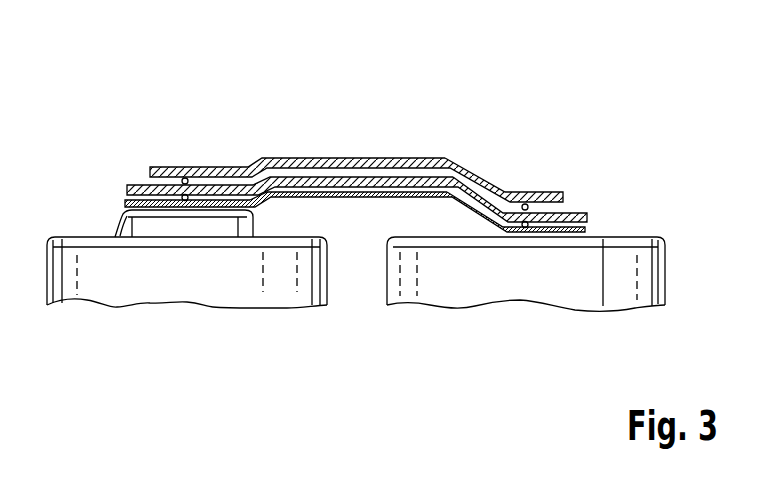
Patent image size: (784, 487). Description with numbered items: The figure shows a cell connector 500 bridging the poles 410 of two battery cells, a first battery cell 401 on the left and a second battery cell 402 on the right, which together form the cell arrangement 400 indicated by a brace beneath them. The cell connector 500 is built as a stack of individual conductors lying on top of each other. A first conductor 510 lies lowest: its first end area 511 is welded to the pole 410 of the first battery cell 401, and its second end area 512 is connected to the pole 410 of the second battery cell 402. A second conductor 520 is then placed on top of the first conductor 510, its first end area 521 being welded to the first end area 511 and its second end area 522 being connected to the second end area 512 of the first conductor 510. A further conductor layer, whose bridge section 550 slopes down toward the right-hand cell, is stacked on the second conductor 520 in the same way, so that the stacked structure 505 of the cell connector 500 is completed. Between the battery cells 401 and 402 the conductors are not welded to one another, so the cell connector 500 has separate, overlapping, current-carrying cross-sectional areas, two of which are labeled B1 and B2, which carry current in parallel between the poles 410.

The battery cell arrangement 400 is at (448, 378).
The first battery cell 401 is at (287, 310).
The second battery cell 402 is at (428, 312).
The pole 410 is at (182, 218).
The cell connector 500 is at (261, 103).
The connecting element 505 is at (340, 110).
The first conductor 510 is at (240, 207).
The first end area of the first conductor 511 is at (127, 203).
The second end area of the first conductor 512 is at (585, 228).
The second conductor 520 is at (250, 167).
The first end area of the second conductor 521 is at (137, 188).
The second end area of the second conductor 522 is at (577, 212).
The bridge section 550 is at (483, 187).
The first current-carrying cross-sectional area B1 is at (328, 193).
The second current-carrying cross-sectional area B2 is at (380, 157).